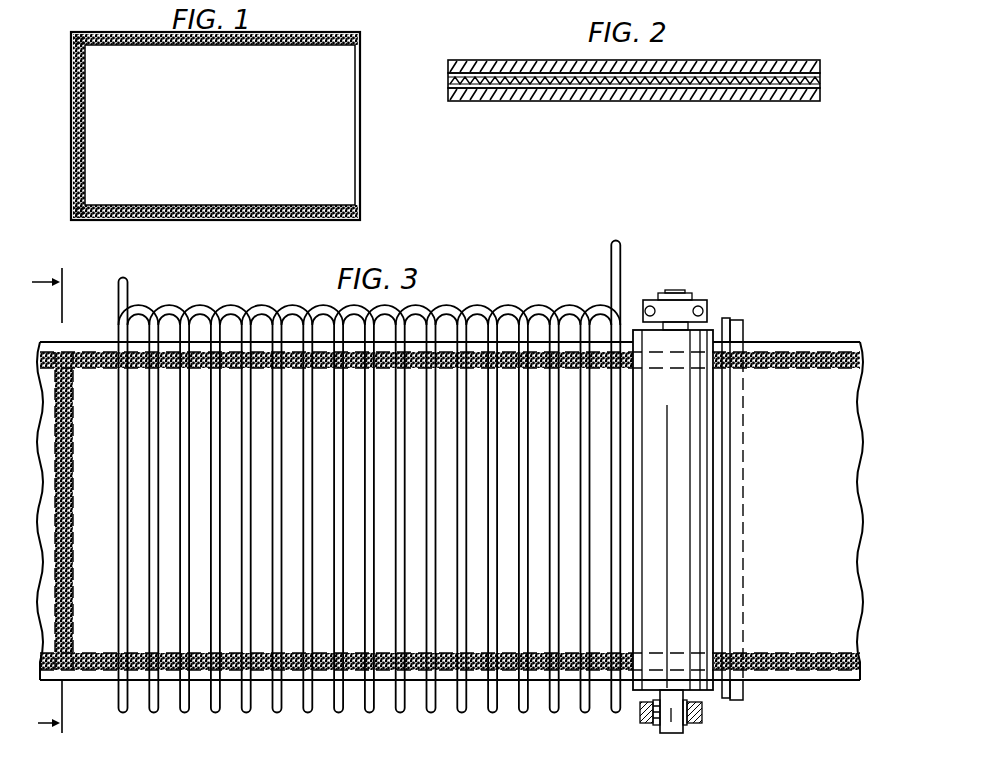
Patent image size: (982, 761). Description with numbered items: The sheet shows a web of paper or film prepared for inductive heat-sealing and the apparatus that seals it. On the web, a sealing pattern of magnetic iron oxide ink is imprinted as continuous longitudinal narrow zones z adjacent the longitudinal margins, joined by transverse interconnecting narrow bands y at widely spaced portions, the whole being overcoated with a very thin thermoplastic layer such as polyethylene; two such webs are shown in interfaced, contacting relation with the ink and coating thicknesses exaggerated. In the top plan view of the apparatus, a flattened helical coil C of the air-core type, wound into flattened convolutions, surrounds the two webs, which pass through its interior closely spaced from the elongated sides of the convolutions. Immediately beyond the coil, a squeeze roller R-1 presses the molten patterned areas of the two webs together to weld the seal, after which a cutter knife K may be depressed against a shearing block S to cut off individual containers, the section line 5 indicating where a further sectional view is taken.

In FIG. 1, the transverse interconnecting narrow band y is at (79, 142).
In FIG. 3, the transverse interconnecting narrow band y is at (68, 522).
In FIG. 1, the continuous longitudinal narrow zone z is at (182, 206).
In FIG. 3, the continuous longitudinal narrow zone z is at (95, 654).
In FIG. 3, the section line 5 is at (41, 504).
In FIG. 3, the flattened helical coil C is at (335, 712).
In FIG. 3, the squeeze roller R-1 is at (688, 405).
In FIG. 3, the cutter knife K is at (730, 447).
In FIG. 3, the shearing block S is at (743, 328).